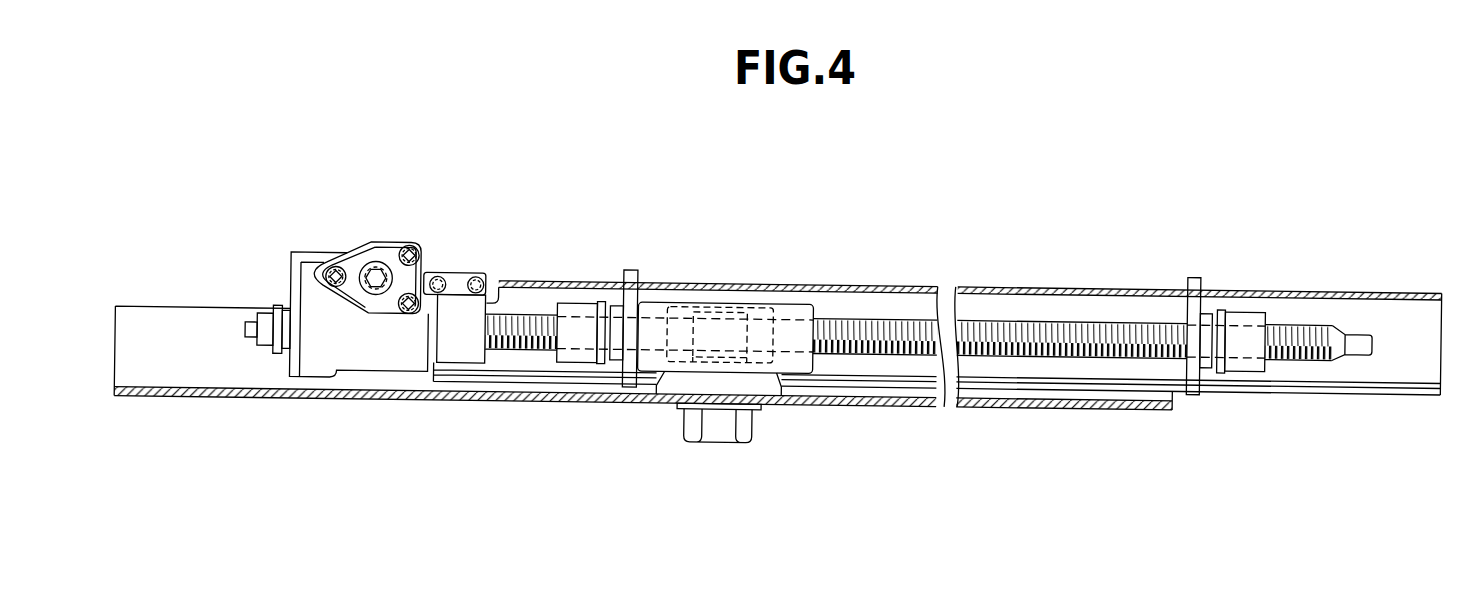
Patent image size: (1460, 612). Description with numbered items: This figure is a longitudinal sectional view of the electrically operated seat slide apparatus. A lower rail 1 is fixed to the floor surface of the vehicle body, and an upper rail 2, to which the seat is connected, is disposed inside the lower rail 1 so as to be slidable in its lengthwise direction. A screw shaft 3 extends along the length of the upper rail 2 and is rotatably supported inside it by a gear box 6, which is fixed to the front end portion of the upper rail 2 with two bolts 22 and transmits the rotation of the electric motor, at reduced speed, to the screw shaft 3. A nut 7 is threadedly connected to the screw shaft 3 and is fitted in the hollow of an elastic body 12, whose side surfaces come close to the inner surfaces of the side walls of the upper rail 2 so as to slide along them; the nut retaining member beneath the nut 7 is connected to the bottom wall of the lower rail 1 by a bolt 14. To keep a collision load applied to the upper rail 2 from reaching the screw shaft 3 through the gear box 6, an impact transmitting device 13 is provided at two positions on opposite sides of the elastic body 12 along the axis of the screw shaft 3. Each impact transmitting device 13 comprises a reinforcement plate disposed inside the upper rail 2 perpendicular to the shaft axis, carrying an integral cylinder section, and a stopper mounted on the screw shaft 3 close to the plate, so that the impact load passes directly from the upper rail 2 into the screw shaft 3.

The lower rail 1 is at (205, 378).
The upper rail 2 is at (1376, 307).
The screw shaft 3 is at (1083, 325).
The gear box 6 is at (358, 357).
The nut 7 is at (715, 302).
The elastic body 12 is at (800, 303).
The impact transmitting device 13 is at (914, 319).
The bolt 14 is at (721, 432).
The bolts 22 is at (440, 272).